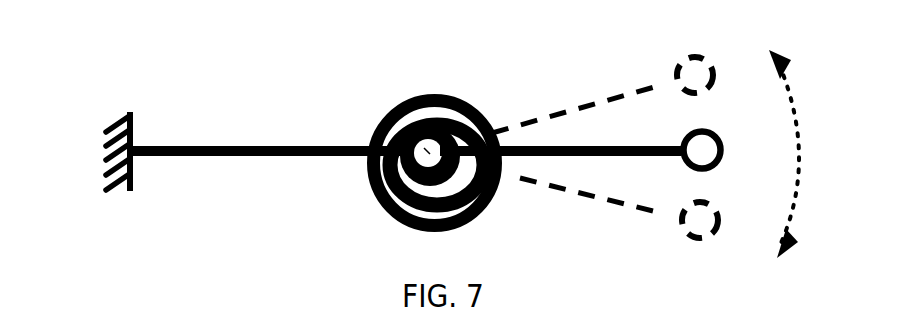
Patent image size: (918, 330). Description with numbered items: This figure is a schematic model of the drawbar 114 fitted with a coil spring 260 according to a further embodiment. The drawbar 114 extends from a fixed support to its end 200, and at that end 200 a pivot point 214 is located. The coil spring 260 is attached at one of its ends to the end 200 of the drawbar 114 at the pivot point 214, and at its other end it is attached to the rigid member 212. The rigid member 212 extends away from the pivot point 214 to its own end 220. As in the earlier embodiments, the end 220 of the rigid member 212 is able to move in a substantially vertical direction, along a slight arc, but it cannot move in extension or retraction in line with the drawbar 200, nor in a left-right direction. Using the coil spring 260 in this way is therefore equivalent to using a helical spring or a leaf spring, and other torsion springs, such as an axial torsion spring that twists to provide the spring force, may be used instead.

The drawbar 114 is at (160, 158).
The end of the drawbar 200 is at (252, 147).
The pivot point 214 is at (410, 127).
The coil spring 260 is at (447, 96).
The rigid member 212 is at (615, 146).
The end of the rigid member 220 is at (713, 132).